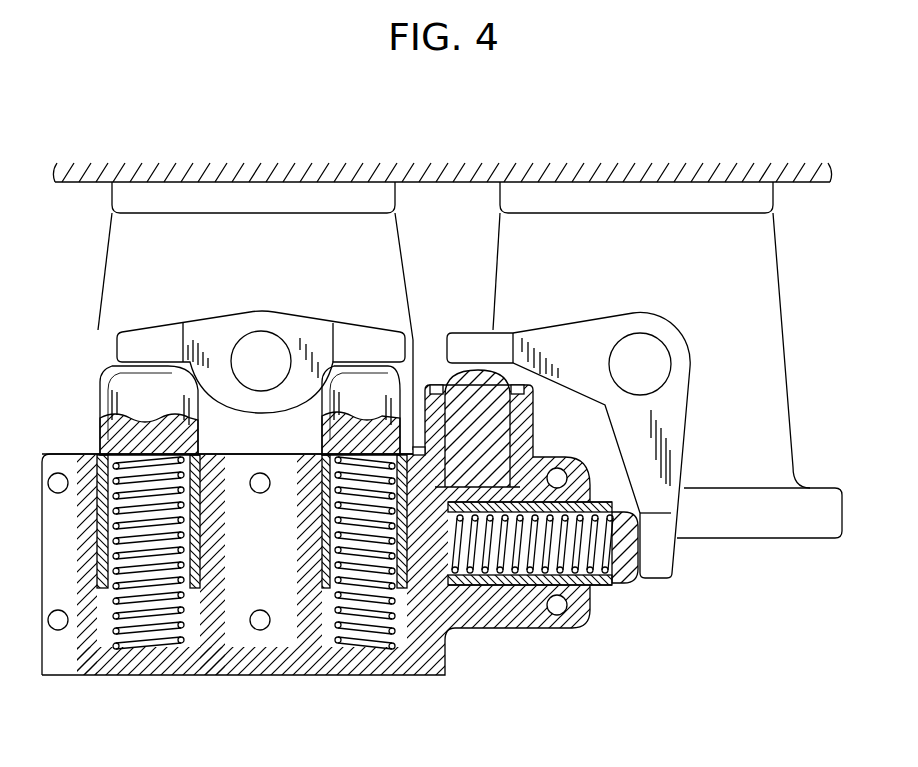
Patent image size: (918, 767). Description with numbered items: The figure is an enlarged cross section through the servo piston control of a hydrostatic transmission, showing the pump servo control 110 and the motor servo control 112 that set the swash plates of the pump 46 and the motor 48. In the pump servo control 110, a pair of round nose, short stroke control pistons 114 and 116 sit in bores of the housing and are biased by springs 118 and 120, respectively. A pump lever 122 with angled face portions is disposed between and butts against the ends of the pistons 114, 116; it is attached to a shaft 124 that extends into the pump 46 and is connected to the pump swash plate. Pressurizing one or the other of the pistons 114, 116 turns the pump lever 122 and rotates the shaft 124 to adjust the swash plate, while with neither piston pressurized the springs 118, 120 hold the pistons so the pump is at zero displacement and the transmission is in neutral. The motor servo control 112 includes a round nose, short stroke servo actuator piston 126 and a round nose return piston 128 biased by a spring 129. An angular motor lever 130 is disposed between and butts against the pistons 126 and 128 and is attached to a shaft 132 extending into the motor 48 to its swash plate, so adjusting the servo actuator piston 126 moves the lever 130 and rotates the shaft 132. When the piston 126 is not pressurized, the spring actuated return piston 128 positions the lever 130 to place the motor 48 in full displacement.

The pump 46 is at (280, 266).
The motor 48 is at (636, 271).
The pump servo control 110 is at (341, 517).
The motor servo control 112 is at (601, 464).
The control piston 114 is at (187, 410).
The control piston 116 is at (338, 408).
The spring 118 is at (153, 630).
The spring 120 is at (378, 630).
The pump lever 122 is at (261, 340).
The shaft 124 is at (250, 345).
The servo actuator piston 126 is at (457, 380).
The return piston 128 is at (619, 567).
The spring 129 is at (533, 563).
The motor lever 130 is at (667, 460).
The shaft 132 is at (647, 353).